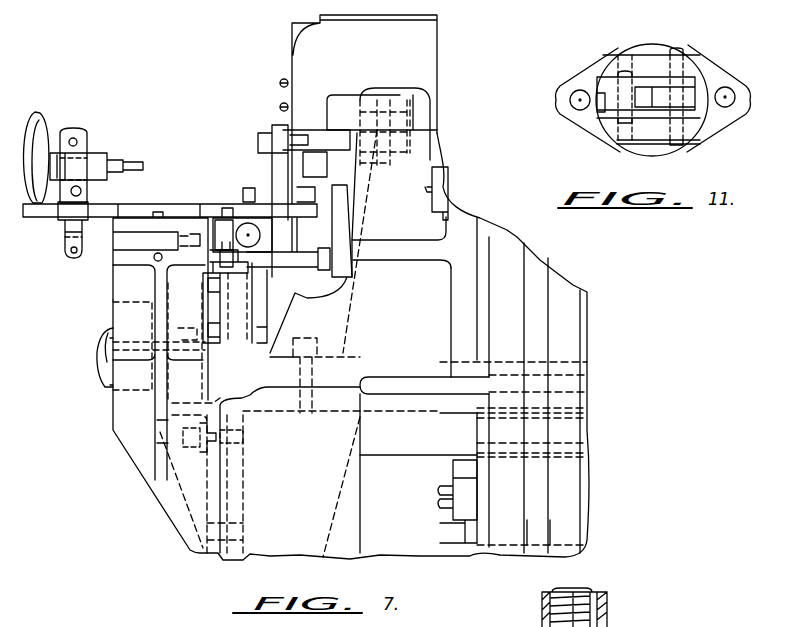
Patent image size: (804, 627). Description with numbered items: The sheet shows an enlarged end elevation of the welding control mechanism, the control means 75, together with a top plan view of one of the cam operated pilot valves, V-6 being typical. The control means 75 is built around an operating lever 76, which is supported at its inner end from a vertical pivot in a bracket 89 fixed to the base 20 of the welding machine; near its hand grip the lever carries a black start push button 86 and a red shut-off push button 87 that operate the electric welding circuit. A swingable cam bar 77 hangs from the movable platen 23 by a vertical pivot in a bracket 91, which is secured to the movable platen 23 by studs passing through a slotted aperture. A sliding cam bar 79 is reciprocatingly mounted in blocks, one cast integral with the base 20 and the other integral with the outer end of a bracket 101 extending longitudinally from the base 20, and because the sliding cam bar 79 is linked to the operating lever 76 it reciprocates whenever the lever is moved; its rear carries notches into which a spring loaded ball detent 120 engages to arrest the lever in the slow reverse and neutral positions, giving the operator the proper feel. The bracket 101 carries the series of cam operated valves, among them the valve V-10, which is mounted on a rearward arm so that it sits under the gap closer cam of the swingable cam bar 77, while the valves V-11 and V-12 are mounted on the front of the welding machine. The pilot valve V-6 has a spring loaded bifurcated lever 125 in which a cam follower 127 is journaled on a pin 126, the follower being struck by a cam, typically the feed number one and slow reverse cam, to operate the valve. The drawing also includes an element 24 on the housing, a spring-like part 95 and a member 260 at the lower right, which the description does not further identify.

In FIG. 7, the base 20 is at (351, 345).
In FIG. 7, the movable platen 23 is at (298, 63).
In FIG. 7, the cover block 24 is at (342, 102).
In FIG. 7, the control means 75 is at (92, 274).
In FIG. 7, the operating lever 76 is at (34, 135).
In FIG. 7, the swingable cam bar 77 is at (248, 226).
In FIG. 7, the sliding cam bar 79 is at (140, 238).
In FIG. 7, the "start" push button 86 is at (98, 157).
In FIG. 7, the "shut-off" push button 87 is at (107, 160).
In FIG. 7, the bracket 89 is at (335, 223).
In FIG. 7, the bracket 91 is at (272, 163).
In FIG. 7, the spring 95 is at (607, 603).
In FIG. 7, the bracket 101 is at (162, 440).
In FIG. 7, the spring loaded ball detent 120 is at (192, 202).
In FIG. 11, the spring loaded bifurcated lever 125 is at (610, 83).
In FIG. 11, the pin 126 is at (626, 71).
In FIG. 11, the cam follower 127 is at (601, 104).
In FIG. 7, the spring seat 260 is at (673, 623).
In FIG. 11, the cam operated pilot valve V-6 is at (666, 42).
In FIG. 7, the control valve V-10 is at (252, 303).
In FIG. 7, the control valve V-11 is at (97, 367).
In FIG. 7, the control valve V-12 is at (70, 367).